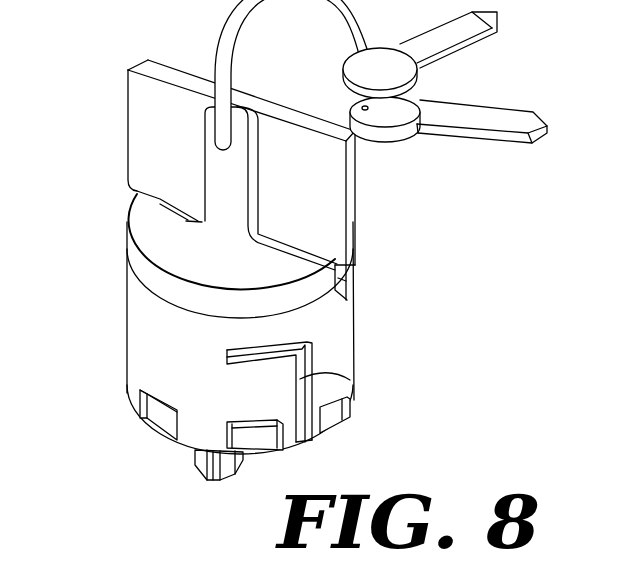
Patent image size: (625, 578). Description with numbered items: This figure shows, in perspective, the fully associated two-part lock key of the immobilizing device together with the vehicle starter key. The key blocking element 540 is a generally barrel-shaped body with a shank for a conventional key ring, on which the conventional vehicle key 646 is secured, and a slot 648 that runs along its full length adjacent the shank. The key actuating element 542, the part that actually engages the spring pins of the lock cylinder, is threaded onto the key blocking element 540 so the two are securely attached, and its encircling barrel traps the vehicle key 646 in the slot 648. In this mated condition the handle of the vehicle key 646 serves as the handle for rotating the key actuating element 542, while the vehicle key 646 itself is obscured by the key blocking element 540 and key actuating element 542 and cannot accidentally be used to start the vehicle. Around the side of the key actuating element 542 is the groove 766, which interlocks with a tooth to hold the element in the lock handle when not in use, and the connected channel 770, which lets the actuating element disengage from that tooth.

The vehicle key 646 is at (152, 133).
The key blocking element 540 is at (160, 273).
The key actuating element 542 is at (342, 326).
The slot 648 is at (357, 265).
The groove 766 is at (257, 367).
The channel 770 is at (330, 373).